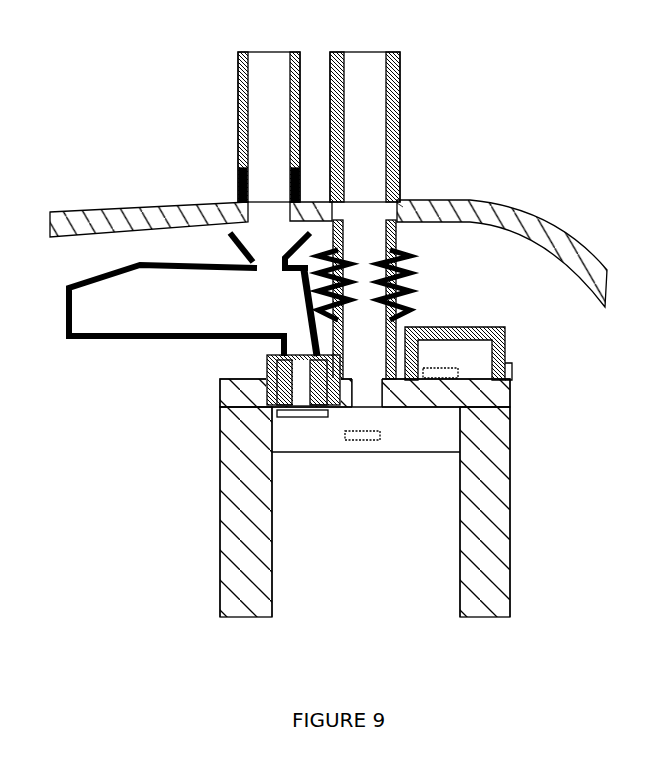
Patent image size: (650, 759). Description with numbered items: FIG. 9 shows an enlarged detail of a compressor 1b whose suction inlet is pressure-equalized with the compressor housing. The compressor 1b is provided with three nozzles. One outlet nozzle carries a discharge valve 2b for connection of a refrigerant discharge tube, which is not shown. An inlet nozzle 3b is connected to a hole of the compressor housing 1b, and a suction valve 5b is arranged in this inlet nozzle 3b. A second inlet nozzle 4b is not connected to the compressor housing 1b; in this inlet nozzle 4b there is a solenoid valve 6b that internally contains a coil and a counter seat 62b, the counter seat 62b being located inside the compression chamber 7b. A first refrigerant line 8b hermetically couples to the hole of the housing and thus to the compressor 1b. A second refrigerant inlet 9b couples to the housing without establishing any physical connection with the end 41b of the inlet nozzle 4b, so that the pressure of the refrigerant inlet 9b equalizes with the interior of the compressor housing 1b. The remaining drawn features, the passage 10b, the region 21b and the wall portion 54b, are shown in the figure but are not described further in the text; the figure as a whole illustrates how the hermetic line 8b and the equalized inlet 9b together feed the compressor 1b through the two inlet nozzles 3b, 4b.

The compressor 1b is at (513, 557).
The discharge valve 2b is at (441, 367).
The inlet nozzle 3b is at (369, 376).
The second inlet nozzle 4b is at (297, 355).
The suction valve 5b is at (377, 437).
The solenoid valve 6b is at (266, 364).
The compression chamber 7b is at (433, 427).
The first refrigerant line 8b is at (405, 88).
The second refrigerant inlet 9b is at (238, 60).
The bypass duct 10b is at (67, 339).
The gap 21b is at (399, 207).
The end of the inlet nozzle 41b is at (256, 262).
The housing side wall 54b is at (222, 413).
The counter seat 62b is at (298, 413).